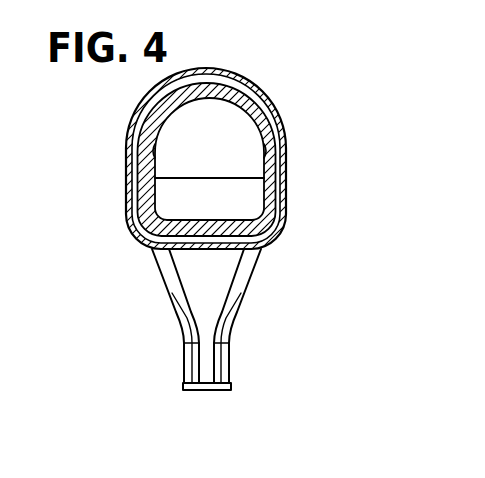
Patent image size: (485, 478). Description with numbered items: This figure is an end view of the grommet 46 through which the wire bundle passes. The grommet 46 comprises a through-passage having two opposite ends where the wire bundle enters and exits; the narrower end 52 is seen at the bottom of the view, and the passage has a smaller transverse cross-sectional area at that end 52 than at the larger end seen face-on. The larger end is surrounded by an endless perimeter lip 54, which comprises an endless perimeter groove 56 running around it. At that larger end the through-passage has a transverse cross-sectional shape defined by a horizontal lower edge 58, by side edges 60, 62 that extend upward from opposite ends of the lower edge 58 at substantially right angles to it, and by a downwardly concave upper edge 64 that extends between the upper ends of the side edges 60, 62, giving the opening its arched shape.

The grommet 46 is at (258, 266).
The end 52 is at (211, 391).
The endless perimeter lip 54 is at (278, 107).
The endless perimeter groove 56 is at (212, 76).
The horizontal lower edge 58 is at (210, 219).
The side edge 60 is at (158, 152).
The side edge 62 is at (260, 152).
The downwardly concave upper edge 64 is at (205, 90).